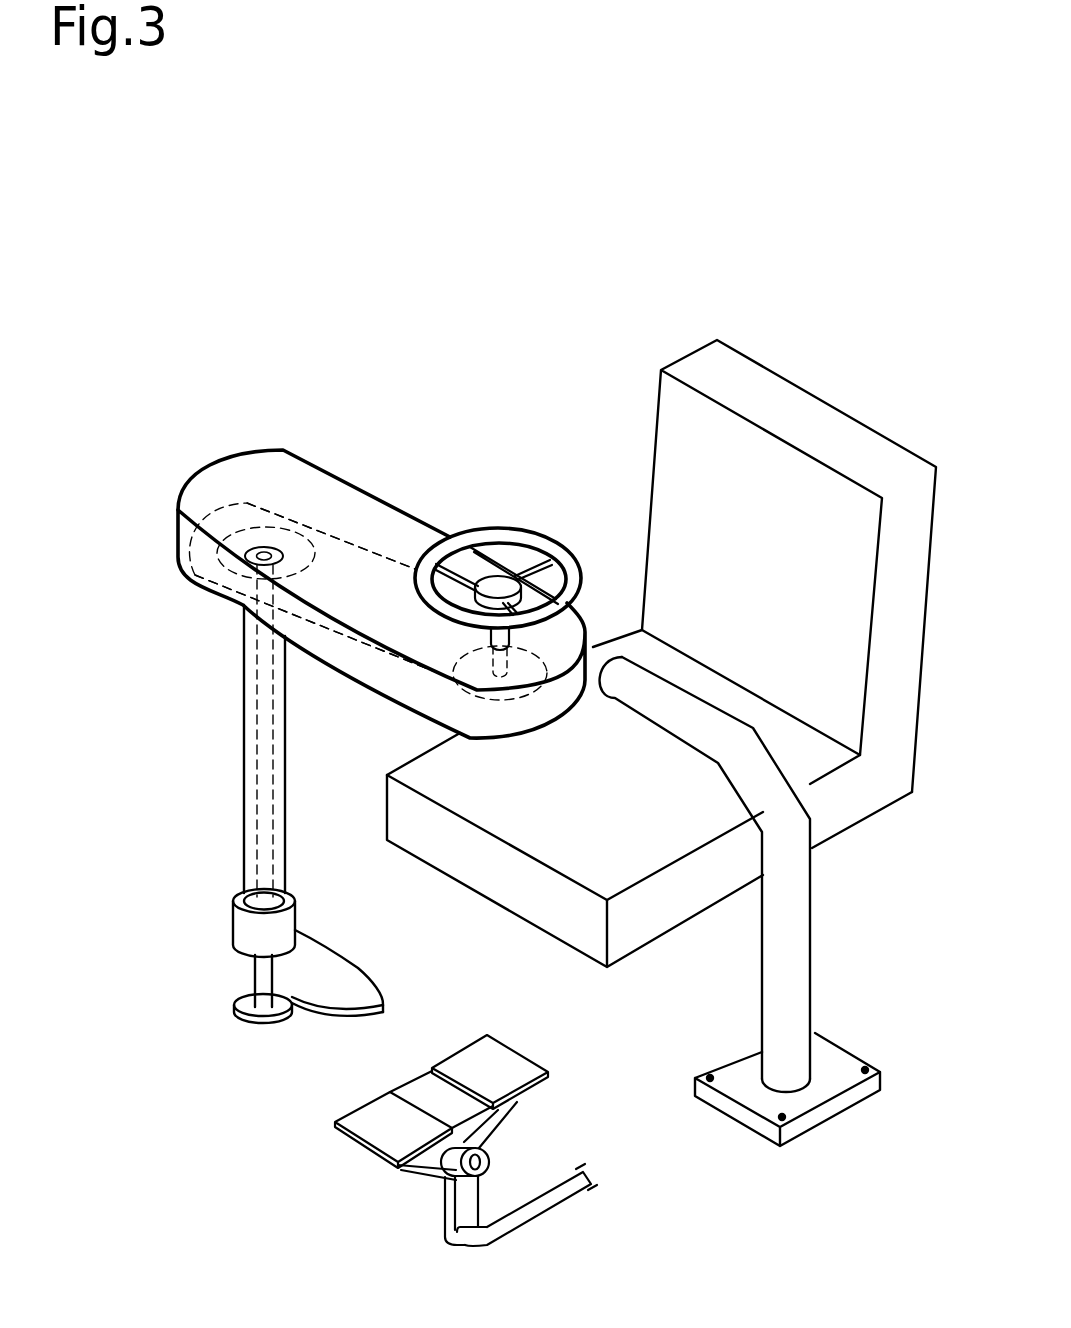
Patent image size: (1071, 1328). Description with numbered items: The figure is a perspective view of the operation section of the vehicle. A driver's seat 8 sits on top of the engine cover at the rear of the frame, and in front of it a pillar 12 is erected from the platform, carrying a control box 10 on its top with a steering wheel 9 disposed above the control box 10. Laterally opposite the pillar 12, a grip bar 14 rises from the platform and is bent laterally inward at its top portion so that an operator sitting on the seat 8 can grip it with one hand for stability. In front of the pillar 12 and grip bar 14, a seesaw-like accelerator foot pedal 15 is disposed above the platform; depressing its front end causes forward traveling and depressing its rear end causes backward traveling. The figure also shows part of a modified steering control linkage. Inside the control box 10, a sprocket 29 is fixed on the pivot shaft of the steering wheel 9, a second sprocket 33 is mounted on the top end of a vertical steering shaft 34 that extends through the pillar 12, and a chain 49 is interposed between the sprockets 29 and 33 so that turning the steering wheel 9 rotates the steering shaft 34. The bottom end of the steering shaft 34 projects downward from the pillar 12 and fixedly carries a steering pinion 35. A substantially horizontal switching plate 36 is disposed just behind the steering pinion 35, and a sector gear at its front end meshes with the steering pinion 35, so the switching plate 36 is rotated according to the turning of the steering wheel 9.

The driver's seat 8 is at (621, 813).
The steering wheel 9 is at (565, 543).
The control box 10 is at (303, 455).
The pillar 12 is at (244, 687).
The grip bar 14 is at (806, 951).
The accelerator foot pedal 15 is at (503, 1035).
The sprocket 29 is at (413, 660).
The sprocket 33 is at (243, 497).
The steering shaft 34 is at (257, 810).
The steering pinion 35 is at (238, 1024).
The switching plate 36 is at (328, 1022).
The chain 49 is at (352, 560).